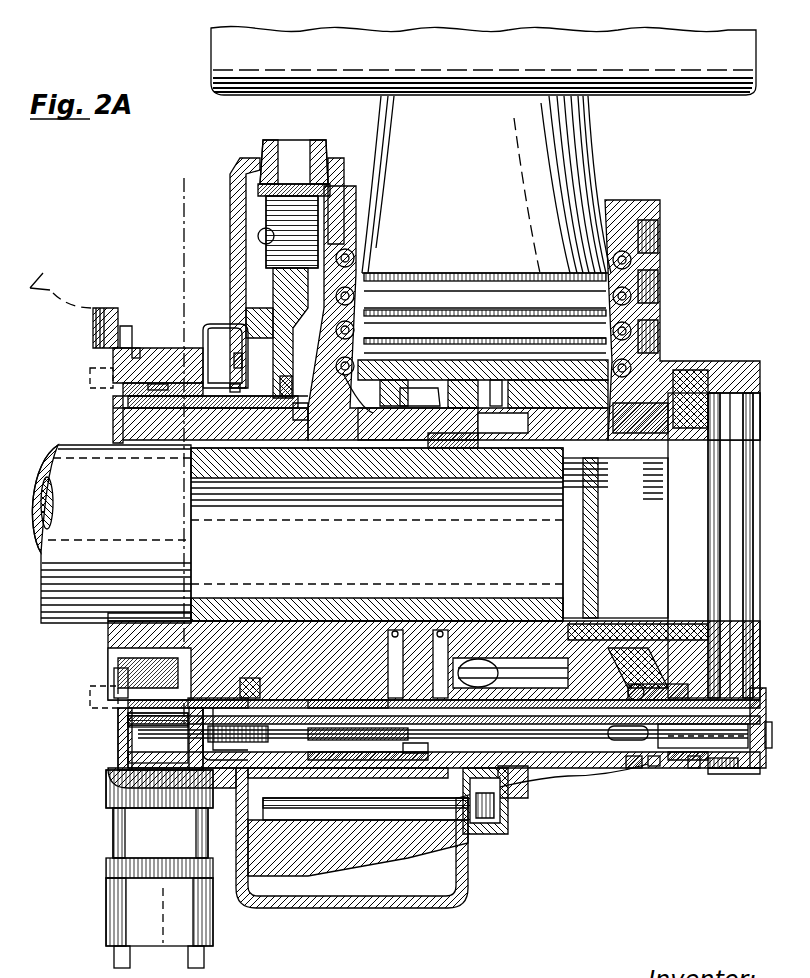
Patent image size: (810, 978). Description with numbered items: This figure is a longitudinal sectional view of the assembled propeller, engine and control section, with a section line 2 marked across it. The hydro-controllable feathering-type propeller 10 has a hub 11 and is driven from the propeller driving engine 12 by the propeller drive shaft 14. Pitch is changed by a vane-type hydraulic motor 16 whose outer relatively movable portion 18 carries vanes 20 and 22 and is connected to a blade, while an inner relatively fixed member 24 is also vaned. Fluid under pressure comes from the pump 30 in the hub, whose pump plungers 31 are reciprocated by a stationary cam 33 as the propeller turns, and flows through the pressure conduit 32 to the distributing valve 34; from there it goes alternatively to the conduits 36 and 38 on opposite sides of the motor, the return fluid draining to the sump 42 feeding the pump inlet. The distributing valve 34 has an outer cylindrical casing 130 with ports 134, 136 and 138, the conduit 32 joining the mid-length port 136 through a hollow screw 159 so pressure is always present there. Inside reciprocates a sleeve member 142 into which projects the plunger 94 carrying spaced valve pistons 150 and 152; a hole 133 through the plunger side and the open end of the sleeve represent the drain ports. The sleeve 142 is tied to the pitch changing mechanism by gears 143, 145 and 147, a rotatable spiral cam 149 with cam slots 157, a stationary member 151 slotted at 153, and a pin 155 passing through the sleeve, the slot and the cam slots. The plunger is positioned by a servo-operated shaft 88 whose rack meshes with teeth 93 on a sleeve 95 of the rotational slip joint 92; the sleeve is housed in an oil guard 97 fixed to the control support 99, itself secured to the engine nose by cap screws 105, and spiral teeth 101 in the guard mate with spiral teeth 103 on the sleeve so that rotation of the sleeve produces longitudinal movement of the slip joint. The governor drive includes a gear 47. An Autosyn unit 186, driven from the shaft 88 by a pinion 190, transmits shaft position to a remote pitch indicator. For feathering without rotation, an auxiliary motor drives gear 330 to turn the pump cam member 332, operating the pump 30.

The section line 2- 2 is at (200, 160).
The propeller 10 is at (192, 48).
The hub 11 is at (294, 412).
The propeller driving engine 12 is at (53, 278).
The propeller drive shaft 14 is at (70, 450).
The hydraulic motor 16 is at (412, 382).
The outer relatively movable portion 18 is at (335, 365).
The vane 20 is at (410, 360).
The vane 22 is at (552, 348).
The inner relatively fixed member 24 is at (508, 362).
The pump 30 is at (294, 124).
The pump plungers 31 is at (264, 258).
The pressure conduit 32 is at (252, 228).
The stationary cam 33 is at (272, 376).
The distributing valve 34 is at (730, 762).
The conduit 36 is at (432, 622).
The conduit 38 is at (386, 622).
The sump 42 is at (368, 892).
The gear 47 is at (112, 676).
The shaft 88 is at (158, 738).
The rotational slip joint 92 is at (240, 684).
The teeth 93 is at (184, 690).
The plunger 94 is at (552, 756).
The sleeve 95 is at (228, 380).
The oil guard 97 is at (205, 322).
The control support 99 is at (128, 345).
The spiral teeth 101 is at (136, 358).
The spiral teeth 103 is at (150, 370).
The cap screws 105 is at (118, 318).
The outer cylindrical casing 130 is at (356, 752).
The hole 133 is at (412, 738).
The port 134 is at (376, 696).
The port 136 is at (510, 764).
The port 138 is at (625, 684).
The sleeve member 142 is at (700, 734).
The gear 143 is at (632, 660).
The gear 145 is at (618, 672).
The gear 147 is at (628, 758).
The rotatable spiral cam 149 is at (645, 758).
The valve piston 150 is at (436, 727).
The stationary member 151 is at (750, 688).
The valve piston 152 is at (613, 730).
The slot 153 is at (720, 712).
The pin 155 is at (710, 758).
The cam slots 157 is at (686, 758).
The hollow screw 159 is at (486, 826).
The Autosyn unit 186 is at (112, 900).
The pinion 190 is at (106, 696).
The gear 330 is at (158, 383).
The pump cam member 332 is at (224, 356).